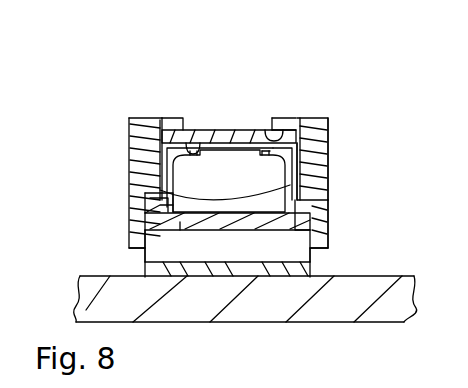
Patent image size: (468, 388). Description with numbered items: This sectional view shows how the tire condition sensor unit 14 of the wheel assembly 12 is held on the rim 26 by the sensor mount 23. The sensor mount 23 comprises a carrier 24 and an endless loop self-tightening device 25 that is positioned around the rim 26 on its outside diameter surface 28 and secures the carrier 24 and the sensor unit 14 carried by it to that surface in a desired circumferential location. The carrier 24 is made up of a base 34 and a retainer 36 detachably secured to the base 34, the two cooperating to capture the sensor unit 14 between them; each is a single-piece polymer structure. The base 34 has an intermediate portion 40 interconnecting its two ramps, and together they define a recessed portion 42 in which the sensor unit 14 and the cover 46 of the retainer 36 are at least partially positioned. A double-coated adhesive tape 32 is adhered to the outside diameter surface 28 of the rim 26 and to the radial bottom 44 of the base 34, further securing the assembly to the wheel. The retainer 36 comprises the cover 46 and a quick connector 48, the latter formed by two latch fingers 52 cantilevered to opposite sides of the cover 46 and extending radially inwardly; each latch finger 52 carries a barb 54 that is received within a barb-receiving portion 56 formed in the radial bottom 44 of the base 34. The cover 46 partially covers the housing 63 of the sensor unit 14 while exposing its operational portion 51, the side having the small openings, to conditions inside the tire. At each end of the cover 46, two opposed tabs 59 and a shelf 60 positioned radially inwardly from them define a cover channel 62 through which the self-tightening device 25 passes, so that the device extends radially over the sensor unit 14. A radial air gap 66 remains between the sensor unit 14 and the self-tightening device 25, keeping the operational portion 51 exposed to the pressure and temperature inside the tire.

The wheel assembly 12 is at (86, 102).
The sensor unit 14 is at (223, 189).
The sensor mount 23 is at (428, 86).
The carrier 24 is at (385, 106).
The self-tightening device 25 is at (246, 132).
The rim 26 is at (92, 305).
The outside diameter surface 28 is at (103, 274).
The double-coated adhesive tape 32 is at (311, 264).
The base 34 is at (328, 196).
The retainer 36 is at (321, 140).
The intermediate portion 40 is at (220, 232).
The recessed portion 42 is at (144, 210).
The radial bottom 44 is at (272, 246).
The cover 46 is at (280, 170).
The quick connector 48 is at (62, 155).
The operational portion 51 is at (192, 130).
The latch finger 52 is at (137, 171).
The barb 54 is at (160, 240).
The barb-receiving portion 56 is at (191, 255).
The tab 59 is at (172, 120).
The shelf 60 is at (163, 147).
The cover channel 62 is at (271, 128).
The housing 63 is at (311, 214).
The radial air gap 66 is at (217, 130).